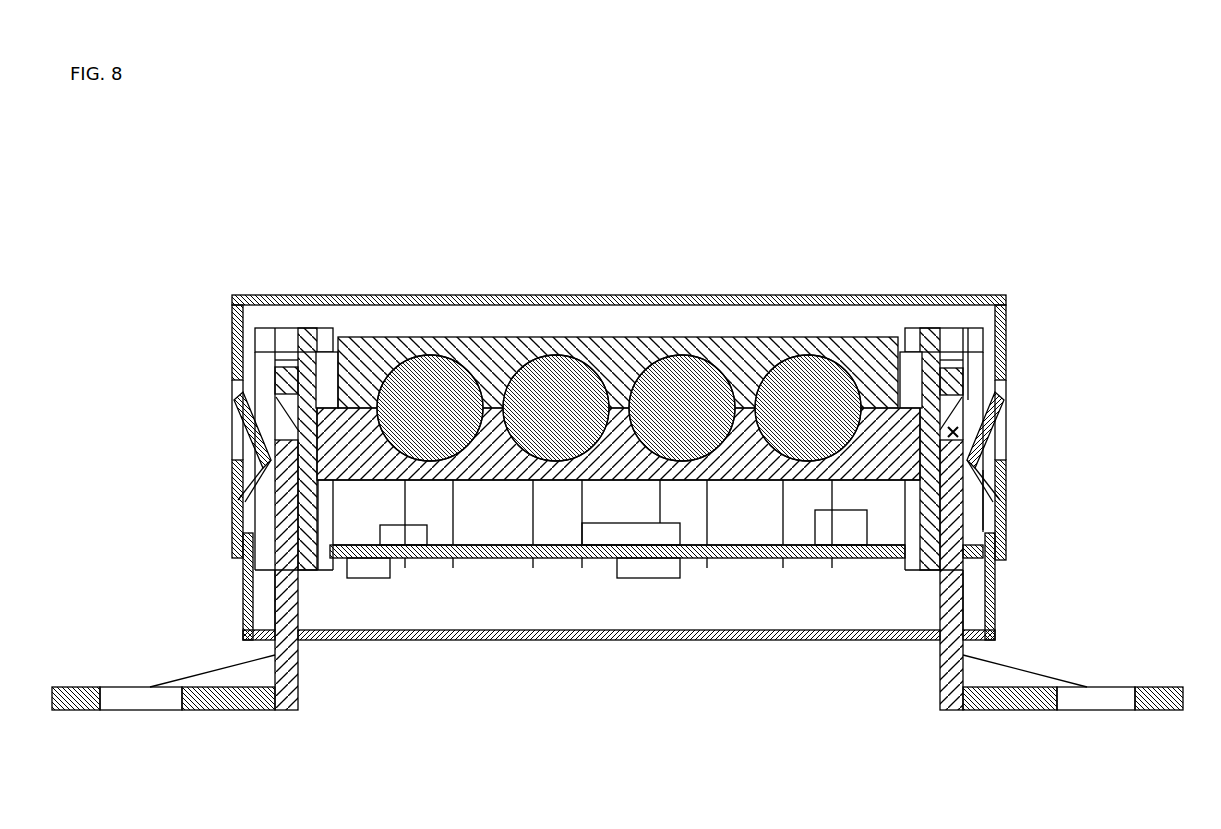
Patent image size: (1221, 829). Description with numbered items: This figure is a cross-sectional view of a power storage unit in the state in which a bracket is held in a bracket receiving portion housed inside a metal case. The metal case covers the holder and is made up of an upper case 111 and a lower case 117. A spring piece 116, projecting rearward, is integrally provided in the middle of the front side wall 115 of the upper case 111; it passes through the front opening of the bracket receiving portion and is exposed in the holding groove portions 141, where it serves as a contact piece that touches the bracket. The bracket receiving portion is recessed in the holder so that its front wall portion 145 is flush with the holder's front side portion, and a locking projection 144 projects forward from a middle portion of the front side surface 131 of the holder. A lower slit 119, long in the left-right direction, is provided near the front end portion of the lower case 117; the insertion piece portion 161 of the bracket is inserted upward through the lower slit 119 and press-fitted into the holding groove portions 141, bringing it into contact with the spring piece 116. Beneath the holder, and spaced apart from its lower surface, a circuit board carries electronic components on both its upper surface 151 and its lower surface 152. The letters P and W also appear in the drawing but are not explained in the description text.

The upper case 111 is at (621, 295).
The front side wall 115 is at (1006, 332).
The spring piece 116 is at (995, 388).
The lower case 117 is at (995, 580).
The lower slit 119 is at (940, 641).
The front side surface 131 is at (947, 340).
The holding groove portions 141 is at (958, 432).
The locking projection 144 is at (965, 403).
The front wall portion 145 is at (985, 510).
The upper surface 151 is at (515, 558).
The lower surface 152 is at (478, 558).
The insertion piece portion 161 is at (965, 607).
The component P is at (415, 510).
The wiring W is at (700, 510).